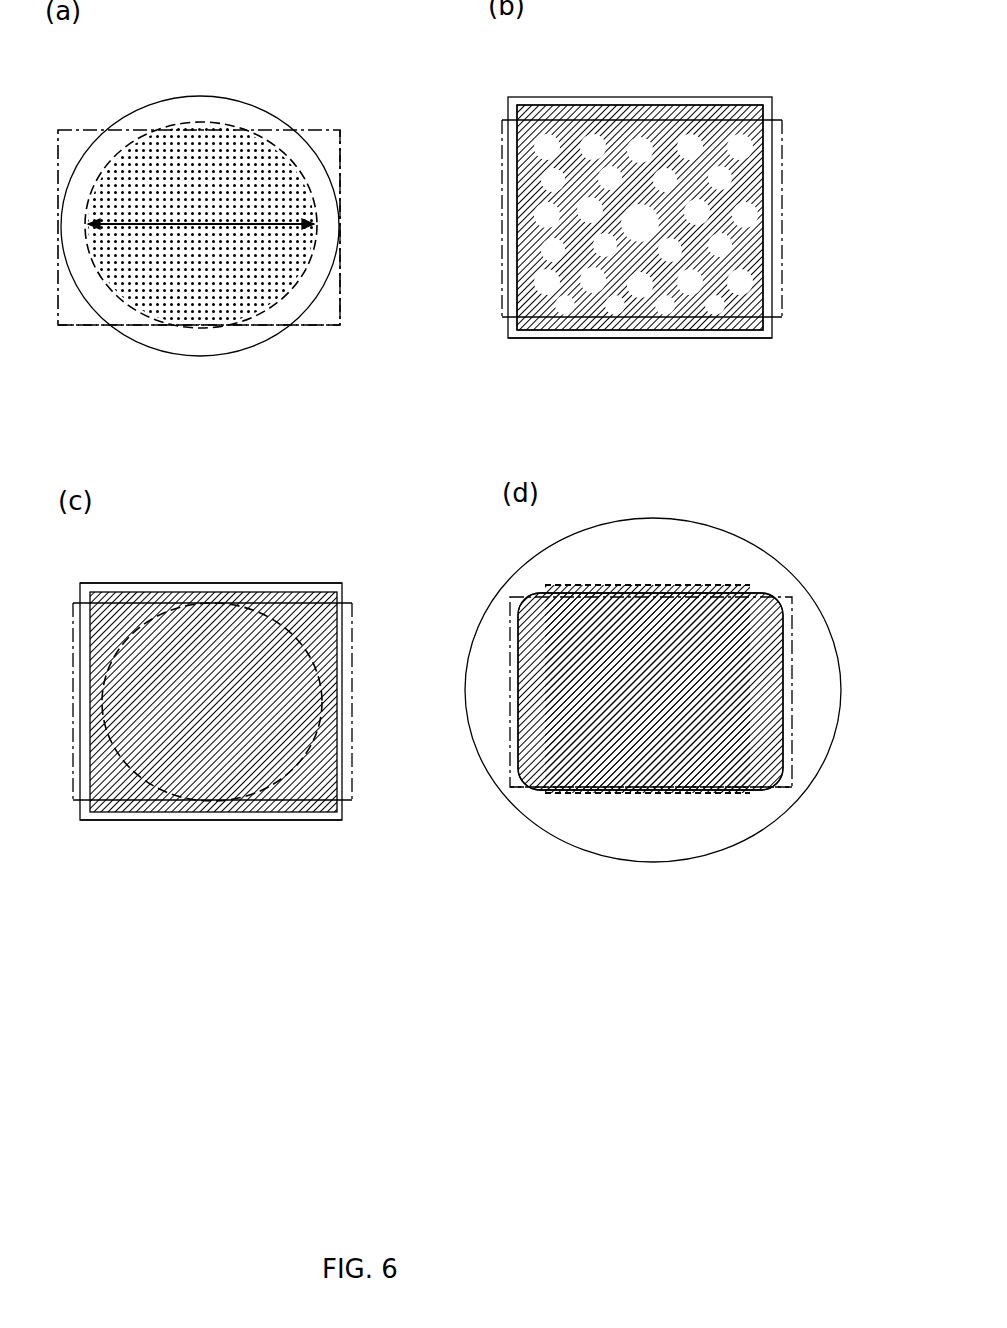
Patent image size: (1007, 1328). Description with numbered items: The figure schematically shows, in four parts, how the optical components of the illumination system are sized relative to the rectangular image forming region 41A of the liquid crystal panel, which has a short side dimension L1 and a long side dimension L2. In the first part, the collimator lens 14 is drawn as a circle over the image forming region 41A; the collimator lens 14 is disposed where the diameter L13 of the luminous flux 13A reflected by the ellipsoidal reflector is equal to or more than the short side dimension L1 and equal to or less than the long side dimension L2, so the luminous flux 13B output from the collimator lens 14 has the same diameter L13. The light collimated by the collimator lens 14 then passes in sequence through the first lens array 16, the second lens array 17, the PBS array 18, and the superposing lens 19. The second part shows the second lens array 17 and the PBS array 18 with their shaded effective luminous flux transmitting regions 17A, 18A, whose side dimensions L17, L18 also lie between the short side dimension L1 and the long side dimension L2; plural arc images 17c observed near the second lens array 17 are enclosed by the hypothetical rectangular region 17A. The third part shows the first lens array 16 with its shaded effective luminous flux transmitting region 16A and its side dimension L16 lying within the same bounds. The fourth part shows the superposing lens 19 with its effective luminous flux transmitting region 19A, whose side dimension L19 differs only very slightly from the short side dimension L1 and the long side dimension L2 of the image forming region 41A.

The collimator lens 14 is at (197, 98).
The luminous flux reflected by the ellipsoidal reflector 13A is at (226, 467).
The luminous flux output from the collimator lens 13B is at (212, 121).
The image forming region 41A is at (300, 130).
The short side dimension L1 is at (340, 162).
The long side dimension L2 is at (318, 325).
The diameter of the luminous flux L13 is at (183, 223).
The second lens array 17 is at (640, 190).
The PBS array 18 is at (553, 72).
The effective luminous flux transmitting region of the second lens array 17A is at (640, 186).
The effective luminous flux transmitting region of the PBS array 18A is at (618, 105).
The arc images 17c is at (745, 177).
The side dimension of the effective luminous flux transmitting region of the second L17 is at (585, 259).
The side dimension of the effective luminous flux transmitting region of the PBS arr L18 is at (517, 255).
The first lens array 16 is at (100, 583).
The effective luminous flux transmitting region of the first lens array 16A is at (172, 592).
The side dimension of the effective luminous flux transmitting region of the first l L16 is at (337, 635).
The superposing lens 19 is at (700, 522).
The effective luminous flux transmitting region of the superposing lens 19A is at (618, 585).
The side dimension of the effective luminous flux transmitting region of the superpo L19 is at (518, 690).